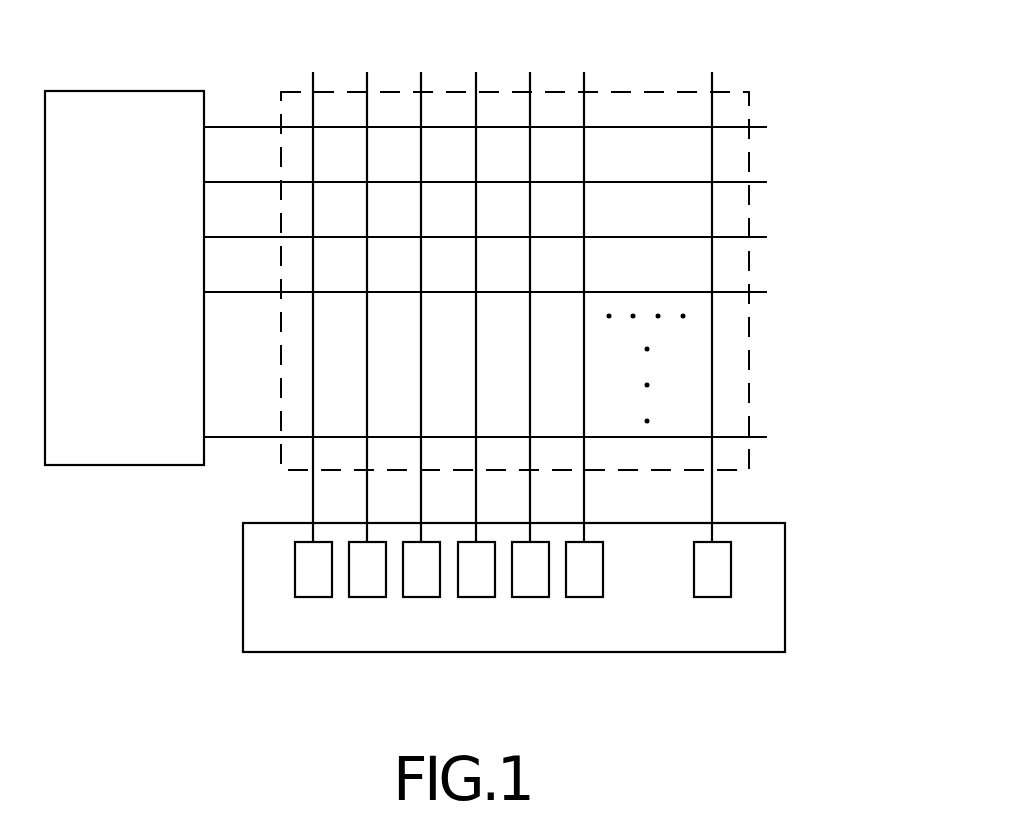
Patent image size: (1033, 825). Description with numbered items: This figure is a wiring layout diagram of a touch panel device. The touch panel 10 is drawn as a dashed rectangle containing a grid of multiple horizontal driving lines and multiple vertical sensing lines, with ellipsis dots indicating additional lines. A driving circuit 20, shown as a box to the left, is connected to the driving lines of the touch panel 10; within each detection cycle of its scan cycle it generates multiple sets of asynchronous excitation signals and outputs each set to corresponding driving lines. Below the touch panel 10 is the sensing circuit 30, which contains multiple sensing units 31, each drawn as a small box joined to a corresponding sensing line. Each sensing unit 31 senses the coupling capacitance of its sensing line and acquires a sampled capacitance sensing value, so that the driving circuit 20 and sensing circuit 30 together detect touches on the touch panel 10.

The touch panel 10 is at (672, 92).
The driving circuit 20 is at (133, 113).
The sensing circuit 30 is at (768, 530).
The sensing unit 31 is at (310, 597).